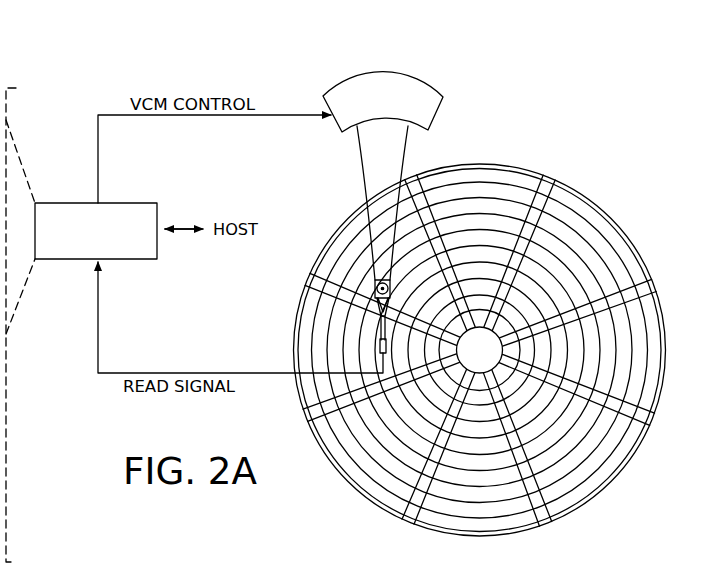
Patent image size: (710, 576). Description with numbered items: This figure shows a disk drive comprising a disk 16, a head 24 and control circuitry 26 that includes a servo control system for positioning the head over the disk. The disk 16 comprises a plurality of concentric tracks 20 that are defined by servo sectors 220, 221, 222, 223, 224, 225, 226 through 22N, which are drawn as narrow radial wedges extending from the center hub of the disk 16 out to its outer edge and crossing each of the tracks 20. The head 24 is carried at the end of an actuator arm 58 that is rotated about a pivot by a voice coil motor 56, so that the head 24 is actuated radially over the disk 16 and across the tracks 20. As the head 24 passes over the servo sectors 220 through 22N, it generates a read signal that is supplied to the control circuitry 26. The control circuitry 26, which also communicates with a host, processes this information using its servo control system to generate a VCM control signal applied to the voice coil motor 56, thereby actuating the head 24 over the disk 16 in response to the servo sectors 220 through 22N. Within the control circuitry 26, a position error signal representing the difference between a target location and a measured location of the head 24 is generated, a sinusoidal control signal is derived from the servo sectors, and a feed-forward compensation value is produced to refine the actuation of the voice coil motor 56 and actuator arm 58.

The disk 16 is at (481, 345).
The tracks 20 is at (480, 190).
The servo sector 22N is at (411, 183).
The servo sector 220 is at (552, 178).
The servo sector 221 is at (644, 283).
The servo sector 222 is at (644, 424).
The servo sector 223 is at (544, 517).
The servo sector 224 is at (407, 517).
The servo sector 225 is at (311, 419).
The servo sector 226 is at (313, 277).
The head 24 is at (373, 343).
The control circuitry 26 is at (128, 203).
The voice coil motor 56 is at (338, 128).
The actuator arm 58 is at (370, 190).